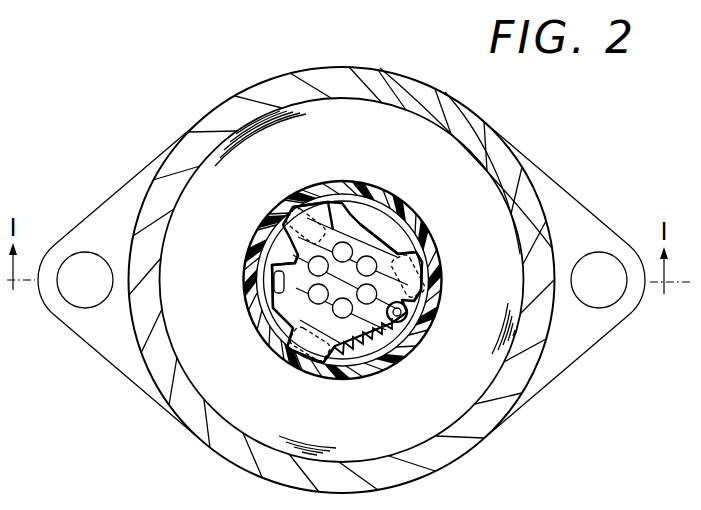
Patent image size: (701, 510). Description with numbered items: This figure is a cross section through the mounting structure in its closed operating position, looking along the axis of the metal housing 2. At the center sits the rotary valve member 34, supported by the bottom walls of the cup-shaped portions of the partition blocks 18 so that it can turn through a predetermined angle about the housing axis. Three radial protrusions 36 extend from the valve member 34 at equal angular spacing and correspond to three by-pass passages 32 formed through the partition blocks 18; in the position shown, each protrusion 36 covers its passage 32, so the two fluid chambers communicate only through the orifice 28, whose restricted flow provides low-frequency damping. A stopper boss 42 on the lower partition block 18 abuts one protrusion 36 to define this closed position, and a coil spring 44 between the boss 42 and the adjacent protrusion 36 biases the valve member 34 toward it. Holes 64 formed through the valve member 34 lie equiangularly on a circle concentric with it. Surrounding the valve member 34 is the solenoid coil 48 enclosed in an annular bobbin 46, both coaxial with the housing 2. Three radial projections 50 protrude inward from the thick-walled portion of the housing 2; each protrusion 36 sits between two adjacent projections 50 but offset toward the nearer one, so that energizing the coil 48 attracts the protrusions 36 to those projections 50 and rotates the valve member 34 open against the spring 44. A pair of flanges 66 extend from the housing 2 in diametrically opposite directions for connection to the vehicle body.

The metal housing 2 is at (358, 80).
The partition block 18 is at (343, 184).
The orifice 28 is at (272, 330).
The by-pass passage 32 is at (303, 206).
The rotary valve member 34 is at (375, 226).
The radial protrusion 36 is at (286, 222).
The stopper boss 42 is at (408, 317).
The coil spring 44 is at (376, 352).
The annular bobbin 46 is at (398, 229).
The solenoid coil 48 is at (284, 112).
The radial projection 50 is at (400, 228).
The hole 64 is at (282, 264).
The flange 66 is at (85, 323).